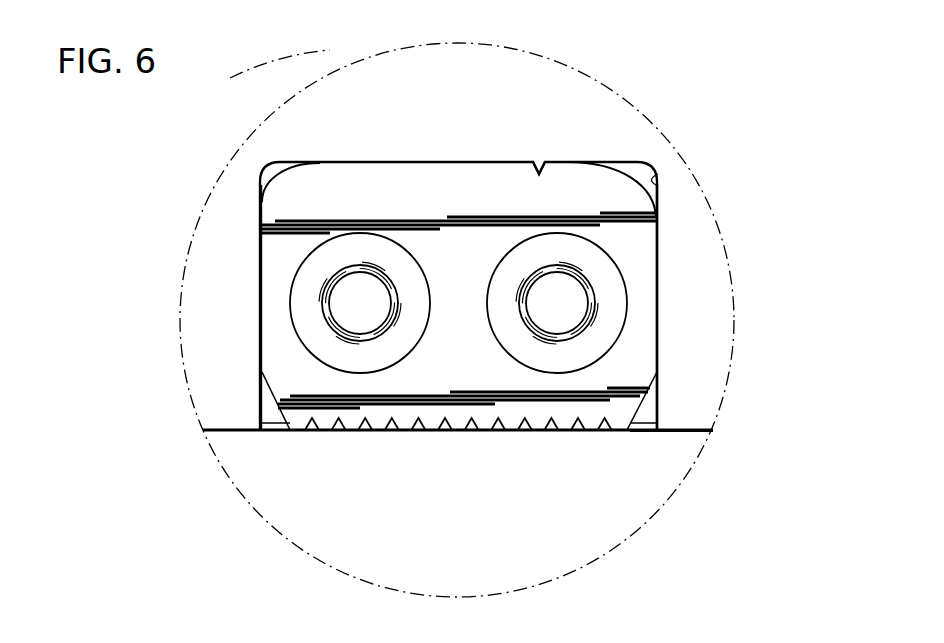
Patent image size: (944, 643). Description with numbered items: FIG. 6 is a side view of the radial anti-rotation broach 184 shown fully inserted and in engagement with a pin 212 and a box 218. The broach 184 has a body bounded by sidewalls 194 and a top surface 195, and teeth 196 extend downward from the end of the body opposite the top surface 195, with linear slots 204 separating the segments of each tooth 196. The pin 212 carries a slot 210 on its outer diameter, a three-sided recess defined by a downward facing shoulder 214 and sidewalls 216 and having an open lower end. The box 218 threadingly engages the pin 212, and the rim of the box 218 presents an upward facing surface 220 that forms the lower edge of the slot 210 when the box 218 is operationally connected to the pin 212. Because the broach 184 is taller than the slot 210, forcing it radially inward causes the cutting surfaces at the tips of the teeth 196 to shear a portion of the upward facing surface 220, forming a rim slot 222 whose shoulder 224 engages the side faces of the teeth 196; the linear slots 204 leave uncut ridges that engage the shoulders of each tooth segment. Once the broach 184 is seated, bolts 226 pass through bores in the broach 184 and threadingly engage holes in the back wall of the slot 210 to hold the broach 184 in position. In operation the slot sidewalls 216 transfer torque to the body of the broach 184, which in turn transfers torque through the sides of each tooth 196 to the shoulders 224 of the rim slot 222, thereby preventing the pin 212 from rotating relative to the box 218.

The broach 184 is at (240, 242).
The sidewalls 194 is at (658, 241).
The top surface 195 is at (568, 158).
The teeth 196 is at (563, 433).
The linear slots 204 is at (365, 433).
The slot 210 is at (637, 163).
The pin 212 is at (335, 93).
The downward facing shoulder 214 is at (543, 165).
The sidewalls 216 is at (658, 178).
The box 218 is at (370, 550).
The upward facing surface 220 is at (643, 424).
The rim slot 222 is at (325, 428).
The shoulder 224 is at (660, 441).
The bolts 226 is at (360, 303).